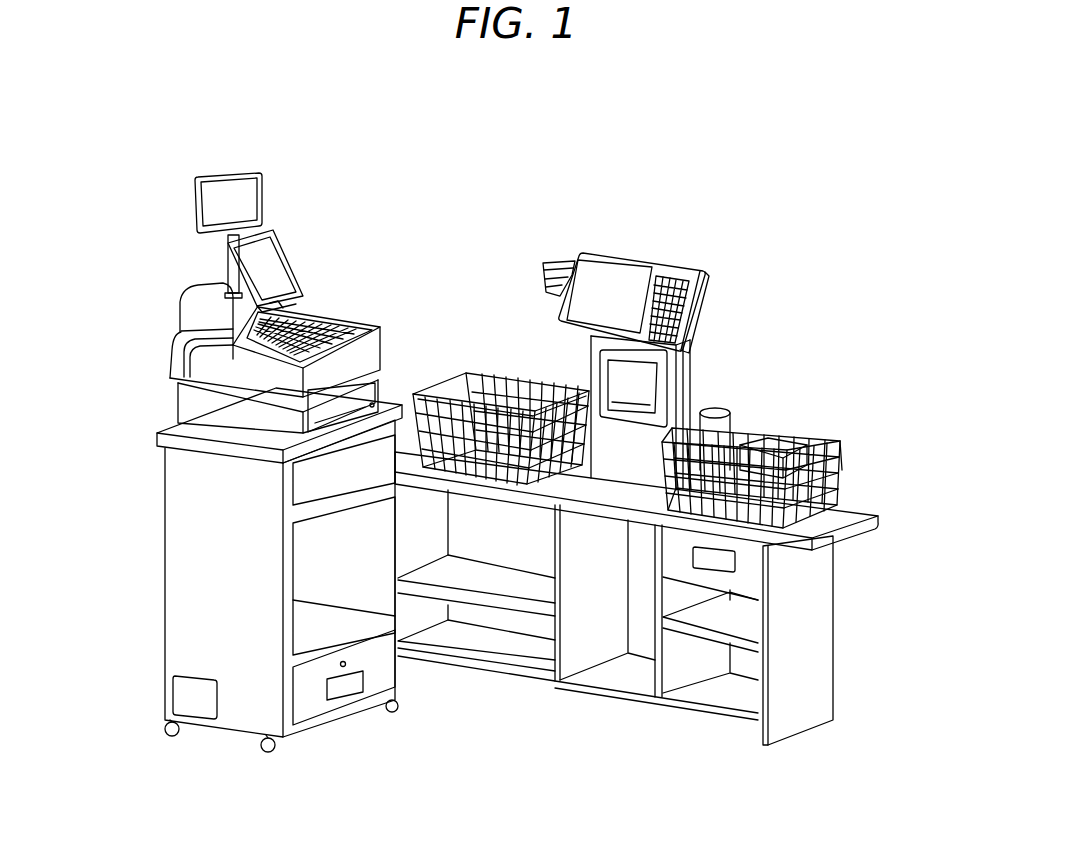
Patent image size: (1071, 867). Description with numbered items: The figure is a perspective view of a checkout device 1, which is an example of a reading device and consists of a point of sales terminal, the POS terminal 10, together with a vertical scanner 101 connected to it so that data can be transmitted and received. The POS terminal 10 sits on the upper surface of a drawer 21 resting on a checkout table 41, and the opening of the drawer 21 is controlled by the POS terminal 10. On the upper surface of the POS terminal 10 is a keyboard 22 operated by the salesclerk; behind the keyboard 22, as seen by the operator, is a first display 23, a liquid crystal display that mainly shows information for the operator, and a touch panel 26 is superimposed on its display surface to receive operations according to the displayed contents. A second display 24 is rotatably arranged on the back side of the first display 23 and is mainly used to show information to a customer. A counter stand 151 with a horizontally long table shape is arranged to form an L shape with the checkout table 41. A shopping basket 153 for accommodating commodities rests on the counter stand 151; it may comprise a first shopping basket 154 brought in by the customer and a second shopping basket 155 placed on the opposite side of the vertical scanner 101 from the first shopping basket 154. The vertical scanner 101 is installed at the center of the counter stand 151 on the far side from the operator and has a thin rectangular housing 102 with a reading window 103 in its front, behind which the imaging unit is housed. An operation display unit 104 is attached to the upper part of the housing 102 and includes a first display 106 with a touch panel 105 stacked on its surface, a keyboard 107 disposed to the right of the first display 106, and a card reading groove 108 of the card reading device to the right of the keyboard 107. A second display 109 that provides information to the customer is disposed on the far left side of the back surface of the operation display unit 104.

The checkout device 1 is at (115, 196).
The POS terminal 10 is at (135, 318).
The drawer 21 is at (185, 415).
The keyboard 22 is at (348, 320).
The first display 23 is at (276, 234).
The second display 24 is at (230, 177).
The touch panel 26 is at (226, 264).
The checkout table 41 is at (185, 572).
The vertical scanner 101 is at (540, 148).
The housing 102 is at (613, 447).
The reading window 103 is at (618, 380).
The operation display unit 104 is at (595, 250).
The touch panel 105 is at (624, 265).
The first display 106 is at (652, 272).
The keyboard 107 is at (690, 277).
The card reading groove 108 is at (703, 268).
The second display 109 is at (553, 262).
The counter stand 151 is at (822, 657).
The shopping basket 153 is at (845, 422).
The first shopping basket 154 is at (846, 448).
The second shopping basket 155 is at (452, 372).